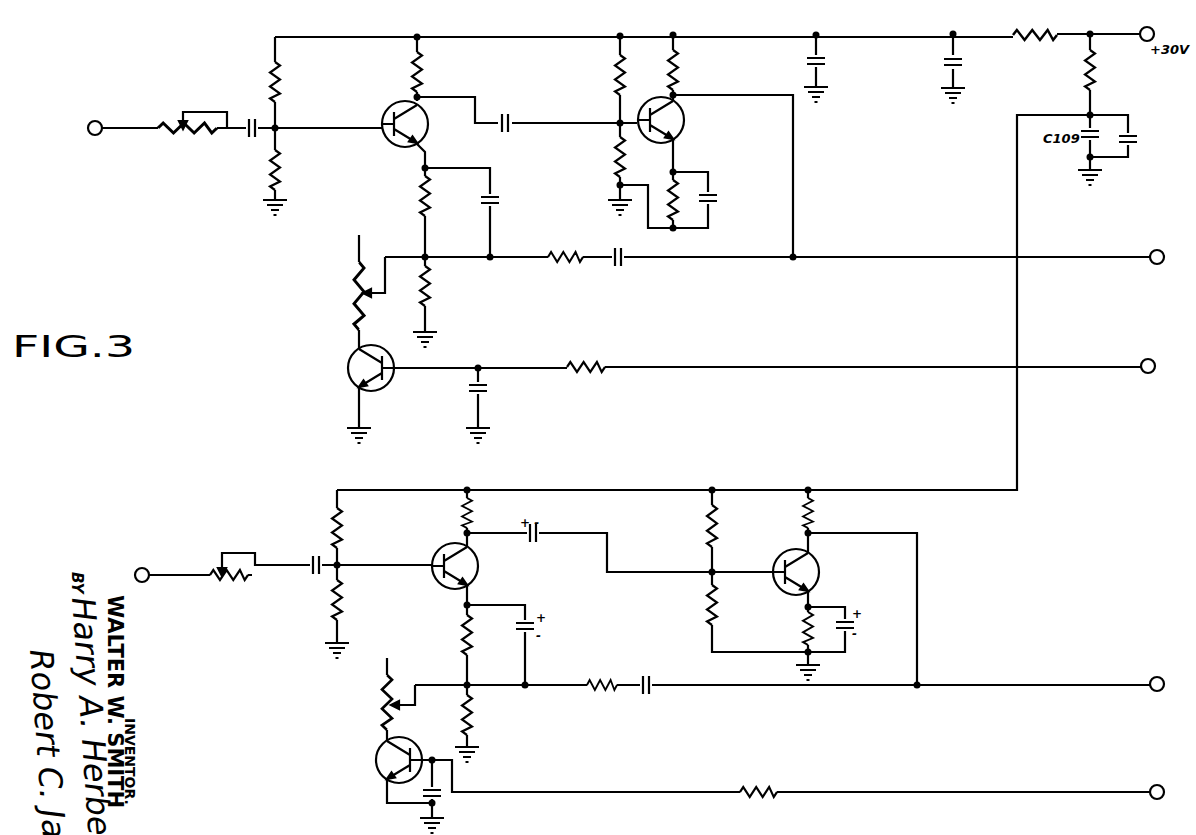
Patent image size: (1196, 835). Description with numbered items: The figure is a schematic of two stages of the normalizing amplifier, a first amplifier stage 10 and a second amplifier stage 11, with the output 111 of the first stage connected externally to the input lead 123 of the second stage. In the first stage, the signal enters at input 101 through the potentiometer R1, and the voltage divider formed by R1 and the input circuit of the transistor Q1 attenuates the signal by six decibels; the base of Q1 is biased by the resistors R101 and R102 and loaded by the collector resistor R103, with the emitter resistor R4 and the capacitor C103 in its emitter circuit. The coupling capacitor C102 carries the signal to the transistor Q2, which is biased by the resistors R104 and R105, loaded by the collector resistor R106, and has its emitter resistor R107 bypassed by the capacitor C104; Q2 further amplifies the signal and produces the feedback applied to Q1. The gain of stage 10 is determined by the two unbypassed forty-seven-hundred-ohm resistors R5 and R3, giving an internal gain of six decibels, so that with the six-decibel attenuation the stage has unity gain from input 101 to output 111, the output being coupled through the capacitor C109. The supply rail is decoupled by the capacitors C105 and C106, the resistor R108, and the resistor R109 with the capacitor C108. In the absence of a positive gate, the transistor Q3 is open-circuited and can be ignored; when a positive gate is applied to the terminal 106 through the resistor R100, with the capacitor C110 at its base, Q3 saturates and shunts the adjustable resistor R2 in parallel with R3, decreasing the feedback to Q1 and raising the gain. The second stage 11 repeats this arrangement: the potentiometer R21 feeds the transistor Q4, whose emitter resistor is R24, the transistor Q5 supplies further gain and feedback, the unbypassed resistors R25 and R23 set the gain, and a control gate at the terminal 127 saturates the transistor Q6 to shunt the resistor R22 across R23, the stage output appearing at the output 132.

The first amplifier stage 10 is at (271, 258).
The second amplifier stage 11 is at (300, 514).
The input 101 is at (100, 135).
The gate terminal 106 is at (1170, 345).
The output 111 is at (1172, 233).
The input lead 123 is at (146, 582).
The control gate terminal 127 is at (1160, 786).
The output 132 is at (1162, 678).
The input attenuator resistor R1 is at (216, 114).
The gain adjusting resistor R2 is at (357, 291).
The unbypassed feedback resistor R3 is at (434, 302).
The emitter resistor R4 is at (411, 212).
The unbypassed feedback resistor R5 is at (589, 269).
The input attenuator resistor R21 is at (273, 577).
The gain adjusting resistor R22 is at (383, 699).
The unbypassed feedback resistor R23 is at (481, 723).
The emitter resistor R24 is at (485, 645).
The unbypassed feedback resistor R25 is at (666, 690).
The gate resistor R100 is at (809, 378).
The bias resistor R101 is at (295, 82).
The bias resistor R102 is at (292, 171).
The collector resistor R103 is at (437, 67).
The bias resistor R104 is at (596, 79).
The bias resistor R105 is at (605, 169).
The collector resistor R106 is at (730, 146).
The emitter resistor R107 is at (659, 197).
The supply decoupling resistor R108 is at (1033, 53).
The supply resistor R109 is at (1111, 74).
The coupling capacitor C102 is at (527, 126).
The bypass capacitor C103 is at (480, 212).
The emitter bypass capacitor C104 is at (688, 200).
The supply filter capacitor C105 is at (836, 68).
The supply filter capacitor C106 is at (971, 68).
The filter capacitor C108 is at (1133, 136).
The output coupling capacitor C109 is at (623, 263).
The gate capacitor C110 is at (497, 405).
The input transistor Q1 is at (351, 127).
The second transistor Q2 is at (674, 133).
The gate transistor Q3 is at (403, 394).
The input transistor Q4 is at (407, 547).
The second transistor Q5 is at (814, 587).
The gate transistor Q6 is at (544, 785).